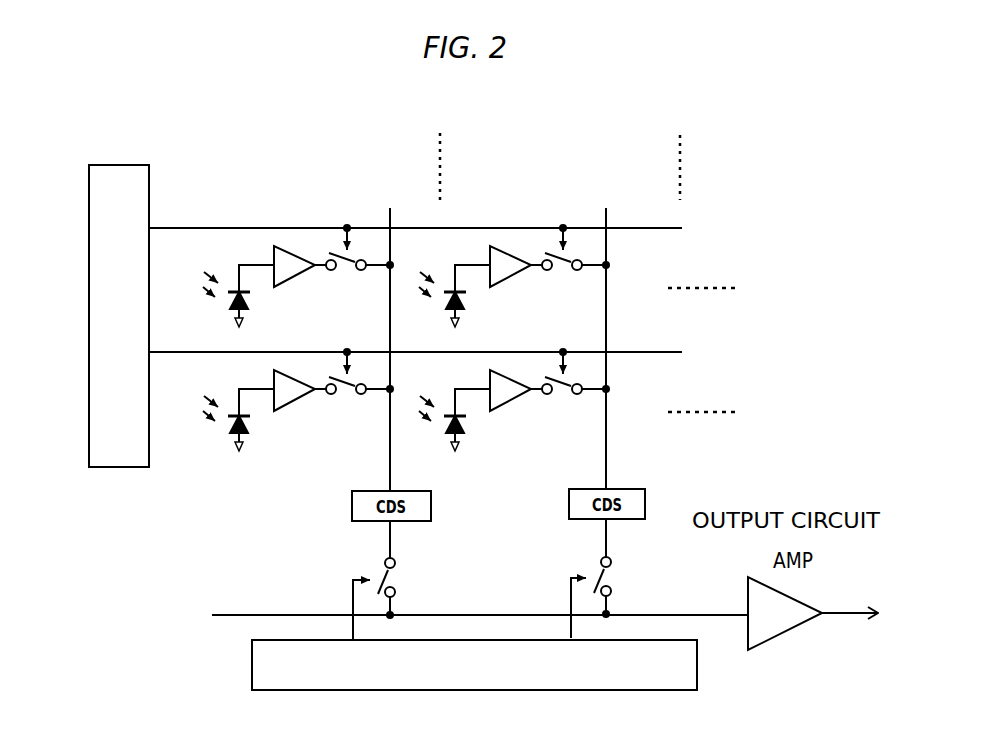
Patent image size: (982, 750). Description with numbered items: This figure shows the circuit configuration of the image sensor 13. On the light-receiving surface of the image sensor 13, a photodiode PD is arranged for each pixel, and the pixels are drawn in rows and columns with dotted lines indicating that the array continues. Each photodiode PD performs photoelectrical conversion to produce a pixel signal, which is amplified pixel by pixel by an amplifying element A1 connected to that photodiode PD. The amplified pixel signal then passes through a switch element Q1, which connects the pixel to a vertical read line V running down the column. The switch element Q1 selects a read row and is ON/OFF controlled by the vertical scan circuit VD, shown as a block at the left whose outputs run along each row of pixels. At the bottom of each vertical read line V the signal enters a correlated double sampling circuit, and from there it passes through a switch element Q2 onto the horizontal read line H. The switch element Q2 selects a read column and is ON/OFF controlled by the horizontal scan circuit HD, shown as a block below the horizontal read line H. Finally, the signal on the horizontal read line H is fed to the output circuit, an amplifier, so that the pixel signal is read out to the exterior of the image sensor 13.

The image sensor 13 is at (372, 158).
The photodiode PD is at (442, 302).
The amplifying element A1 is at (516, 289).
The switch element Q1 is at (566, 292).
The switch element Q2 is at (611, 578).
The vertical scan circuit VD is at (113, 163).
The vertical read line V is at (607, 203).
The horizontal read line H is at (201, 614).
The horizontal scan circuit HD is at (248, 661).